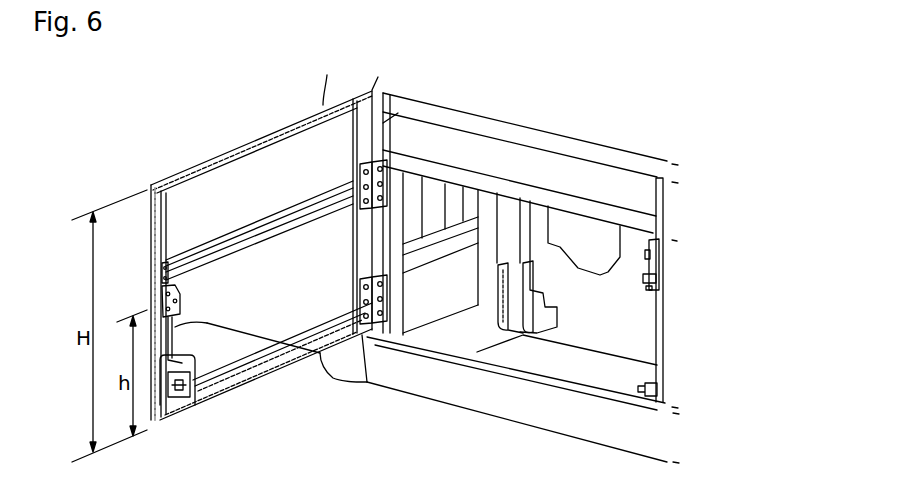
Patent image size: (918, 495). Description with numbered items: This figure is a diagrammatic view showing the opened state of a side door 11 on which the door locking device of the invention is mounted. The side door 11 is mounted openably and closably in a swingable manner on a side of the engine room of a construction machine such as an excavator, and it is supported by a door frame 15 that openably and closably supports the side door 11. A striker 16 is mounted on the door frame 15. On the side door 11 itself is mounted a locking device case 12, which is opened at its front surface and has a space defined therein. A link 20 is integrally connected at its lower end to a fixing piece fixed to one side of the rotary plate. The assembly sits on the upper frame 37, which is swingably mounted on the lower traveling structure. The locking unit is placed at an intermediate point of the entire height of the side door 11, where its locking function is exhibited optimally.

The side door 11 is at (240, 134).
The locking device case 12 is at (188, 392).
The door frame 15 is at (660, 350).
The striker 16 is at (662, 279).
The link 20 is at (176, 329).
The upper frame 37 is at (498, 402).